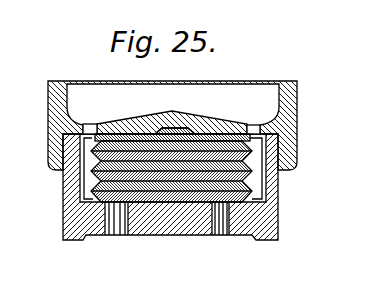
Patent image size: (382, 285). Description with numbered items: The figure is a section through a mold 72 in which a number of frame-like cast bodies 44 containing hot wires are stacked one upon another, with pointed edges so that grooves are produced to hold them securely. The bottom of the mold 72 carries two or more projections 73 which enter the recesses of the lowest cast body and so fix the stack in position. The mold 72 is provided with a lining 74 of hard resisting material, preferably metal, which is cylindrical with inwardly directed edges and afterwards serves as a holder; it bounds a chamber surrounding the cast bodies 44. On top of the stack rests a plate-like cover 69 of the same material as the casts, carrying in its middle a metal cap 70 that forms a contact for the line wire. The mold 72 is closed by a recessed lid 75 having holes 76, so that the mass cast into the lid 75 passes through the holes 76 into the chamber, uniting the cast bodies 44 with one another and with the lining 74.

The frame 44 is at (254, 188).
The plate-like cover 69 is at (127, 133).
The metal cap 70 is at (173, 130).
The mold 72 is at (72, 220).
The projections 73 is at (115, 222).
The lining 74 is at (72, 183).
The lid 75 is at (299, 113).
The holes 76 is at (88, 123).